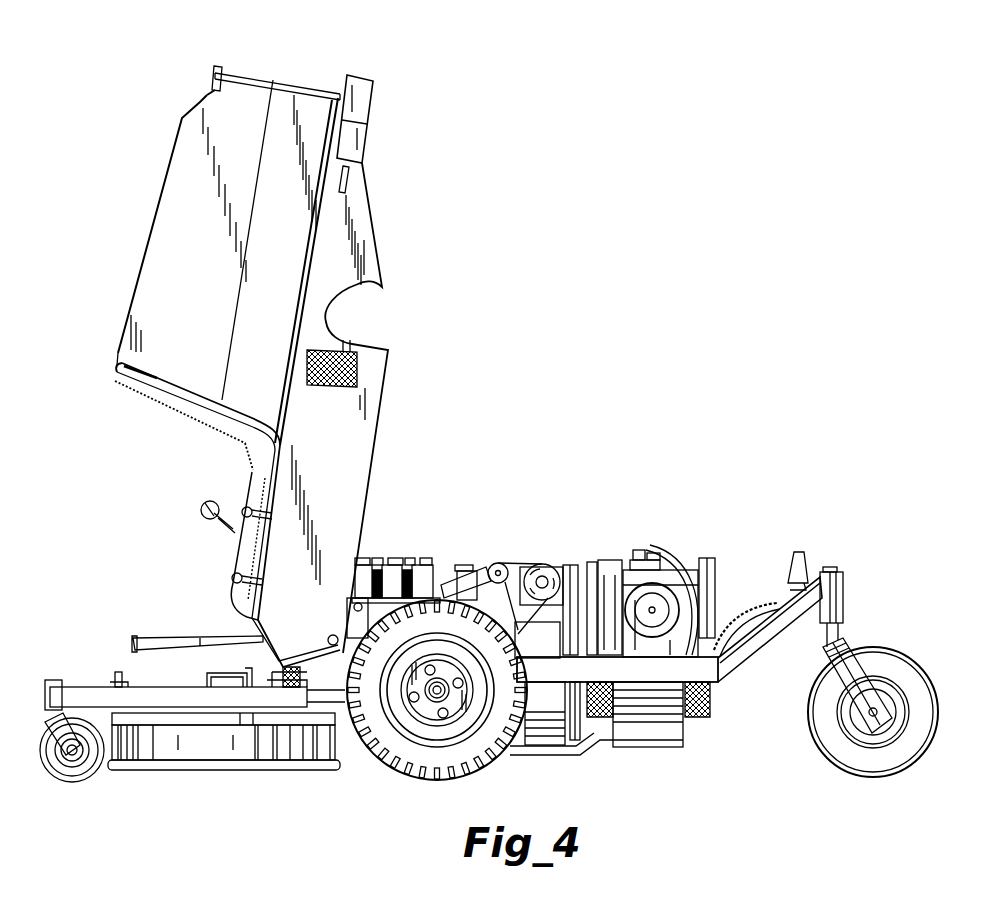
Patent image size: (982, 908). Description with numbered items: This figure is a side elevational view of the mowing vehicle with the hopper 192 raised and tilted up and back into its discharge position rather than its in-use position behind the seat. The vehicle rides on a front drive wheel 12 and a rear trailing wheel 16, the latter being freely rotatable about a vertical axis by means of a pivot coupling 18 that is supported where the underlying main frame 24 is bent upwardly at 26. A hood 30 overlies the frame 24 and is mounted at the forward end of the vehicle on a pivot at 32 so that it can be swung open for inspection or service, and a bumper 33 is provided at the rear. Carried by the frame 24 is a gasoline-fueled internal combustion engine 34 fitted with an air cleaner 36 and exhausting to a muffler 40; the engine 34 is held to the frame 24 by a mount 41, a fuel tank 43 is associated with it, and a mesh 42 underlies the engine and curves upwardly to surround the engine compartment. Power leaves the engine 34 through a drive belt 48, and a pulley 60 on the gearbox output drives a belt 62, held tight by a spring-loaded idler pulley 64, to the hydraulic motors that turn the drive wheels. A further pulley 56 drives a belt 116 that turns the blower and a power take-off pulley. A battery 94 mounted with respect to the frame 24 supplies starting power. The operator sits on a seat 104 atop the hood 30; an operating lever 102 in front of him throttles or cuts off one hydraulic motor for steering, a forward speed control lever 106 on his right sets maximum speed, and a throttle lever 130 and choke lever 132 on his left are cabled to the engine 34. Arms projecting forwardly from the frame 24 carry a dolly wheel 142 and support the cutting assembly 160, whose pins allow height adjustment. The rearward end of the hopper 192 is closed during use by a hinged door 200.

The drive wheel 12 is at (448, 782).
The trailing wheel 16 is at (822, 756).
The pivot coupling 18 is at (845, 606).
The main frame 24 is at (705, 667).
The upwardly bent frame portion 26 is at (755, 648).
The hood 30 is at (384, 430).
The pivot 32 is at (327, 640).
The bumper 33 is at (366, 90).
The internal combustion engine 34 is at (684, 572).
The air cleaner 36 is at (678, 590).
The muffler 40 is at (625, 566).
The mount 41 is at (652, 742).
The mesh 42 is at (762, 614).
The fuel tank 43 is at (714, 588).
The drive belt 48 is at (602, 580).
The pulley 56 is at (578, 560).
The pulley 60 is at (548, 563).
The belt 62 is at (515, 562).
The spring-loaded idler pulley 64 is at (492, 562).
The battery 94 is at (372, 556).
The operating lever 102 is at (154, 636).
The seat 104 is at (172, 428).
The forward speed control lever 106 is at (203, 506).
The belt 116 is at (574, 736).
The throttle lever 130 is at (231, 579).
The choke lever 132 is at (245, 492).
The dolly wheel 142 is at (76, 782).
The cutting assembly 160 is at (209, 773).
The hopper 192 is at (165, 165).
The hinged door 200 is at (262, 75).